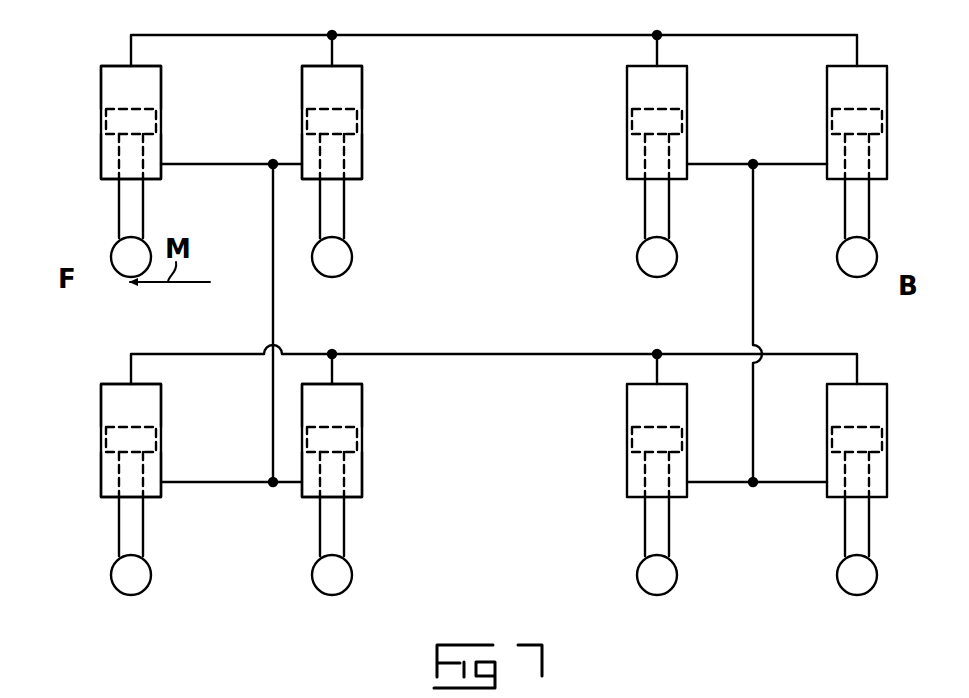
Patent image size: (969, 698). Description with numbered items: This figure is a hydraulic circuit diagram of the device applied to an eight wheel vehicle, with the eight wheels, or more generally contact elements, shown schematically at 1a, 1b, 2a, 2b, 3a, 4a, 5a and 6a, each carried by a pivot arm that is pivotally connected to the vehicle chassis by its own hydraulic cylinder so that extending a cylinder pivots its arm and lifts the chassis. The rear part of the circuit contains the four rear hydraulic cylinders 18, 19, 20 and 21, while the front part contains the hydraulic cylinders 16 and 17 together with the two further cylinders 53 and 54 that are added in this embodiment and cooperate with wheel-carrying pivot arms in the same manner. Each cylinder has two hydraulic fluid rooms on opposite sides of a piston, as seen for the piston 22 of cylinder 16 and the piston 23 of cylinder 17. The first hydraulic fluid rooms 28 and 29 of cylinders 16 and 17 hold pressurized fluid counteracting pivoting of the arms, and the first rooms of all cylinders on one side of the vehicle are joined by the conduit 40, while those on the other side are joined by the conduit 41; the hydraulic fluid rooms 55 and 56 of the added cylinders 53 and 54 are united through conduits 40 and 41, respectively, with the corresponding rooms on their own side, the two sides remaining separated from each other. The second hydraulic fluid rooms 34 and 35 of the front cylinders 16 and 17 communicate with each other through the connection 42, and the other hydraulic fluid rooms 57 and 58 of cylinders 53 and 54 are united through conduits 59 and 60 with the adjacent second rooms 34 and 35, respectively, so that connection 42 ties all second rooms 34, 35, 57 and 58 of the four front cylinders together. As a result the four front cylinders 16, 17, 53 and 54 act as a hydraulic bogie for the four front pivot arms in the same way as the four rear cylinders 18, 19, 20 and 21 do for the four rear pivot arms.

The wheel 1a is at (118, 263).
The wheel 1b is at (342, 265).
The wheel 2a is at (122, 580).
The wheel 2b is at (328, 584).
The wheel 3a is at (645, 262).
The wheel 4a is at (645, 580).
The wheel 5a is at (845, 265).
The wheel 6a is at (842, 583).
The hydraulic cylinder 16 is at (382, 451).
The hydraulic cylinder 17 is at (380, 124).
The hydraulic cylinder 18 is at (595, 462).
The hydraulic cylinder 19 is at (596, 137).
The hydraulic cylinder 20 is at (818, 419).
The hydraulic cylinder 21 is at (808, 126).
The piston 22 is at (318, 438).
The piston 23 is at (320, 120).
The first hydraulic fluid room 28 is at (350, 405).
The first hydraulic fluid room 29 is at (350, 85).
The second hydraulic fluid room 34 is at (355, 480).
The second hydraulic fluid room 35 is at (352, 160).
The conduit 40 is at (428, 353).
The conduit 41 is at (447, 36).
The conduit 42 is at (276, 292).
The hydraulic cylinder 53 is at (185, 436).
The hydraulic cylinder 54 is at (180, 118).
The hydraulic fluid room 55 is at (150, 400).
The hydraulic fluid room 56 is at (153, 78).
The hydraulic fluid room 57 is at (150, 486).
The hydraulic fluid room 58 is at (152, 167).
The conduit 59 is at (243, 483).
The conduit 60 is at (236, 165).